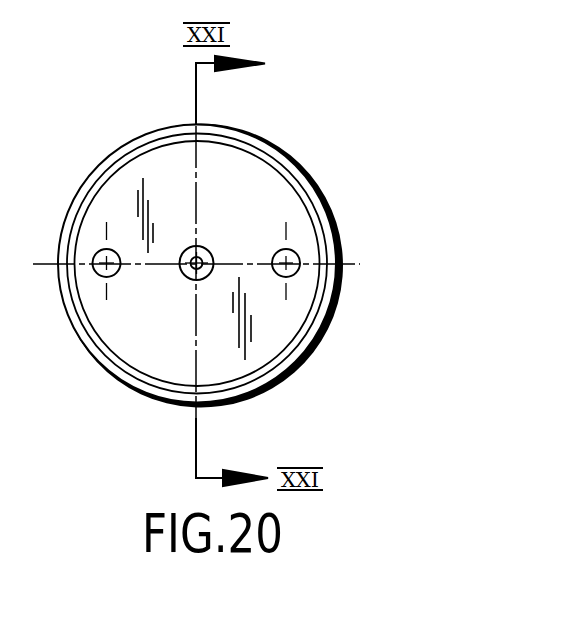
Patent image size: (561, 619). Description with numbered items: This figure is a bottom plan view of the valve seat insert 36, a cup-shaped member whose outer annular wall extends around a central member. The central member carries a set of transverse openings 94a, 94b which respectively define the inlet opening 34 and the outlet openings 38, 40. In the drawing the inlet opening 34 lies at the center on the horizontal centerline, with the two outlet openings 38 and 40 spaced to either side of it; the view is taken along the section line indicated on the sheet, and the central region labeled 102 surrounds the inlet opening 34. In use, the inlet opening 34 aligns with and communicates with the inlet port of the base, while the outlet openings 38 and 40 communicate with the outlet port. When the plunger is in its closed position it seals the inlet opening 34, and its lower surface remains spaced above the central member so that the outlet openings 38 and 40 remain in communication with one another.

The valve seat insert 36 is at (330, 133).
The central opening 102 is at (206, 248).
The transverse opening 94a is at (116, 249).
The transverse opening 94b is at (297, 255).
The outlet opening 38 is at (81, 305).
The inlet opening 34 is at (167, 308).
The outlet opening 40 is at (311, 289).